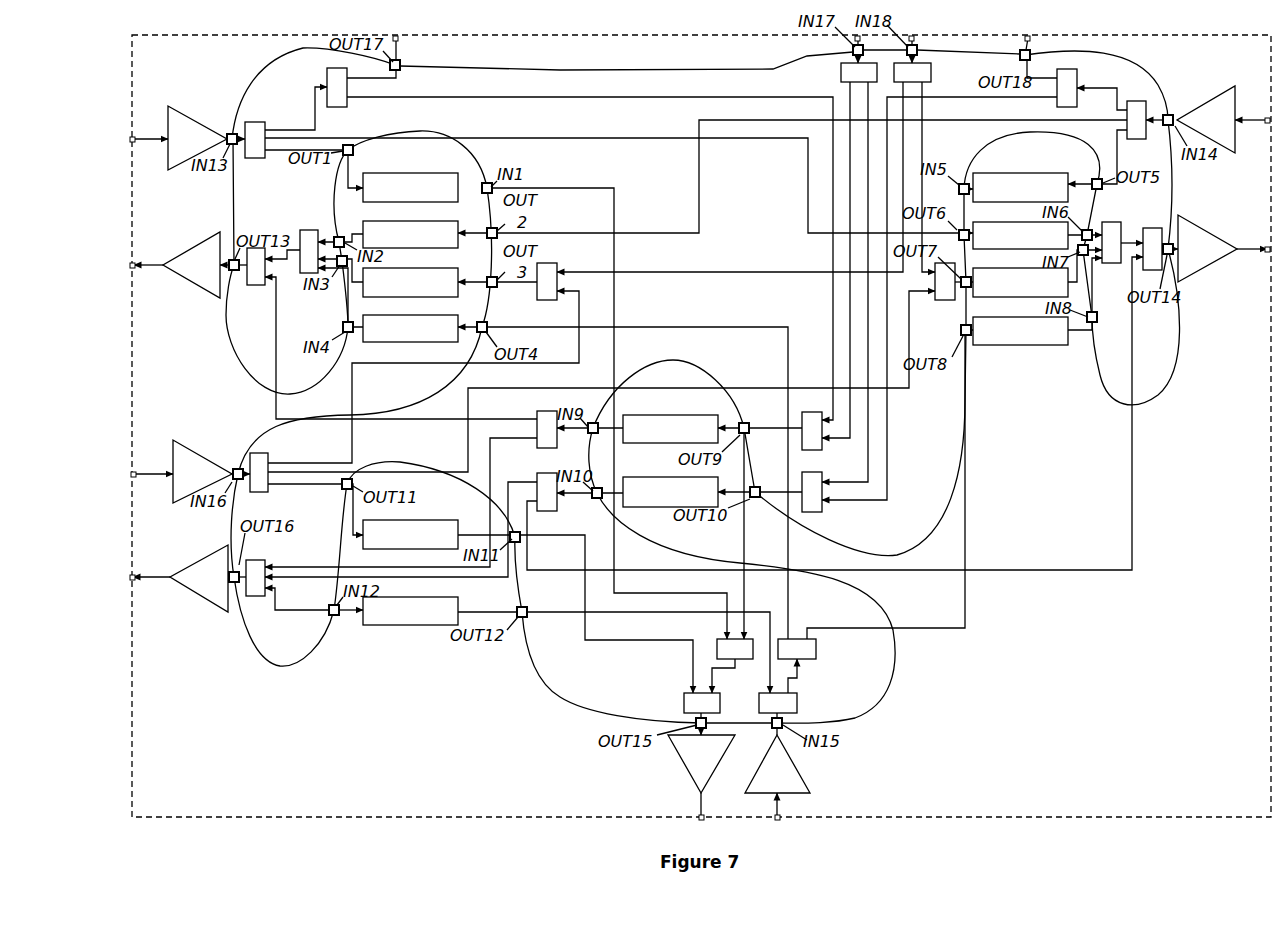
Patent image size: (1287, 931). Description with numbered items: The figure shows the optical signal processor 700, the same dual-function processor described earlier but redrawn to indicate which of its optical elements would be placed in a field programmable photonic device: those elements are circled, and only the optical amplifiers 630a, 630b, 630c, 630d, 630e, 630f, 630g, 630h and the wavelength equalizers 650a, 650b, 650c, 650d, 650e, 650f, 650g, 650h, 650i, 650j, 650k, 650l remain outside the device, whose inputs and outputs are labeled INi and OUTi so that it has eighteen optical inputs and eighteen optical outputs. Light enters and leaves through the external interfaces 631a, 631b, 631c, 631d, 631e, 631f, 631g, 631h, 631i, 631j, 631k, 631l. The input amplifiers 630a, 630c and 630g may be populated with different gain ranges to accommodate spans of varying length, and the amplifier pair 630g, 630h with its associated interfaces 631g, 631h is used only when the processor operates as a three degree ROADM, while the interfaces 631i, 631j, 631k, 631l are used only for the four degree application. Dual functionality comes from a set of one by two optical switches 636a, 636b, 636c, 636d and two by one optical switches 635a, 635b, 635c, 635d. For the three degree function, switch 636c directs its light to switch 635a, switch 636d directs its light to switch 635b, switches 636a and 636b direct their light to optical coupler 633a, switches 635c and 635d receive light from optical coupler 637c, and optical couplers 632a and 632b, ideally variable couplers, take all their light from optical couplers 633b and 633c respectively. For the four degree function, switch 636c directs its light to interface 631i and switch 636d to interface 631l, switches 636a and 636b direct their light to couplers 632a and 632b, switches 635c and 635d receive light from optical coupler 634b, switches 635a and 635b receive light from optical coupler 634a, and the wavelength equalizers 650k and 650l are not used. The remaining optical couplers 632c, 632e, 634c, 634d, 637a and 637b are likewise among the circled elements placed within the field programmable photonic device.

The optical signal processor with field programmable photonics 700 is at (190, 25).
The input amplifier 630a is at (203, 125).
The amplifier A2 630b is at (203, 242).
The input amplifier 630c is at (1207, 102).
The amplifier A4 630d is at (1199, 227).
The amplifier A5 630e is at (801, 776).
The amplifier A6 630f is at (686, 764).
The input amplifier 630g is at (203, 457).
The optical amplifier 630h is at (210, 555).
The port 631a is at (136, 143).
The port 631b is at (135, 268).
The port 631c is at (1265, 125).
The port 631d is at (1264, 253).
The port 631e is at (785, 814).
The port 631f is at (705, 815).
The external interface 631g is at (135, 476).
The external interface 631h is at (136, 580).
The optical interface 631i is at (396, 40).
The external interface 631j is at (860, 38).
The external interface 631k is at (914, 38).
The optical interface 631l is at (1030, 40).
The optical coupler 632a is at (262, 286).
The optical coupler 632b is at (1152, 219).
The 2:1 multiplexer 632c is at (742, 660).
The 2:1 multiplexer 632e is at (683, 705).
The optical coupler 633a is at (263, 560).
The optical coupler 633b is at (312, 231).
The optical coupler 633c is at (1110, 221).
The optical coupler 634a is at (842, 67).
The optical coupler 634b is at (933, 73).
The 1:2 demultiplexer 634c is at (818, 647).
The 1:2 demultiplexer 634d is at (797, 699).
The 2 by 1 optical switch 635a is at (815, 450).
The 2 by 1 optical switch 635b is at (818, 511).
The 2 by 1 optical switch 635c is at (966, 327).
The 2 by 1 optical switch 635d is at (537, 300).
The 1 by 2 optical switch 636a is at (555, 448).
The 1 by 2 optical switch 636b is at (557, 510).
The 1 by 2 optical switch 636c is at (347, 107).
The 1 by 2 optical switch 636d is at (1078, 72).
The 1:3 demultiplexer 637a is at (257, 122).
The 1:3 demultiplexer 637b is at (1147, 101).
The optical coupler 637c is at (266, 453).
The wavelength element WE1 650a is at (457, 192).
The wavelength element WE2 650b is at (457, 240).
The wavelength element WE3 650c is at (457, 288).
The wavelength element WE4 650d is at (457, 334).
The wavelength element WE5 650e is at (1057, 192).
The wavelength element WE6 650f is at (1057, 240).
The wavelength element WE7 650g is at (1057, 287).
The wavelength element WE8 650h is at (1057, 336).
The wavelength element WE9 650i is at (715, 434).
The wavelength element WE10 650j is at (715, 497).
The wavelength equalizer 650k is at (457, 540).
The wavelength equalizer 650l is at (457, 615).